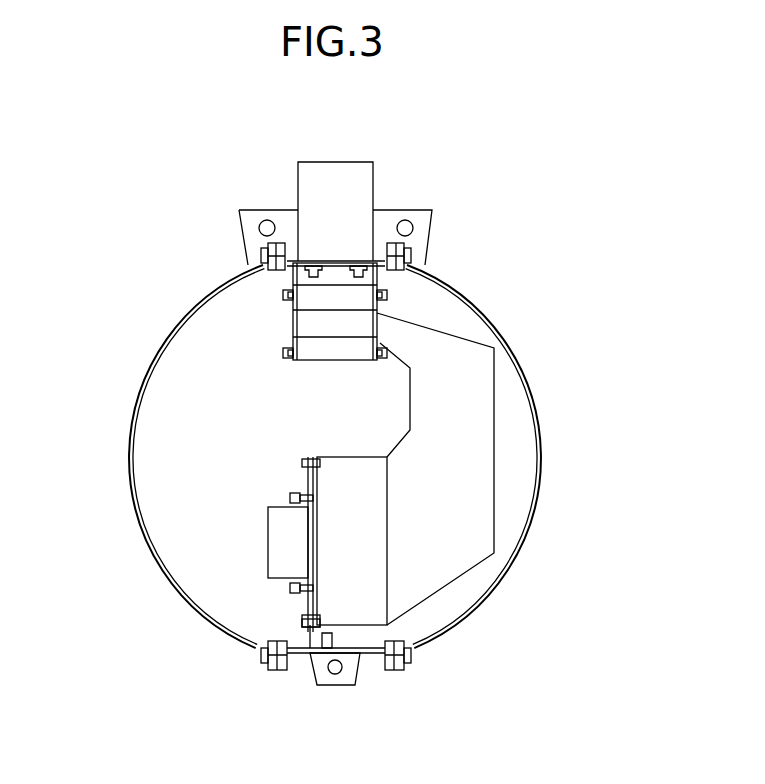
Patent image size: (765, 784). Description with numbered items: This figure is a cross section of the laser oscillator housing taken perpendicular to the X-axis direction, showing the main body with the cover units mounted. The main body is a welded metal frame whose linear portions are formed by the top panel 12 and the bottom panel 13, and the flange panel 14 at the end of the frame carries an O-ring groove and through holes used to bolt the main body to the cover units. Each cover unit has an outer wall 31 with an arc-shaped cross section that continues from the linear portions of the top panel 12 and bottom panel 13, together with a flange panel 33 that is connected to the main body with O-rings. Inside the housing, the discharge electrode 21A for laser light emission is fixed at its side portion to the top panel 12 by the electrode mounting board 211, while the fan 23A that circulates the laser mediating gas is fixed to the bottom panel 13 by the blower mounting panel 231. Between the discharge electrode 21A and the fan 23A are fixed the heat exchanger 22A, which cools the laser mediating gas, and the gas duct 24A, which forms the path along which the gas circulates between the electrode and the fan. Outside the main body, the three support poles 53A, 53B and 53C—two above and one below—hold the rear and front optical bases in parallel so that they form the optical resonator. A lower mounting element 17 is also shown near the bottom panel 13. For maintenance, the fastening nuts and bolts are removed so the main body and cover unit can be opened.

The top panel 12 is at (345, 261).
The bottom panel 13 is at (298, 655).
The flange panel 14 is at (392, 660).
The lower mount 17 is at (393, 645).
The discharge electrode 21A is at (325, 360).
The electrode mounting board 211 is at (293, 323).
The heat exchanger 22A is at (388, 498).
The fan 23A is at (268, 535).
The blower mounting panel 231 is at (300, 597).
The gas duct 24A is at (494, 455).
The outer wall 31 is at (540, 411).
The flange panel 33 is at (401, 662).
The support pole 53A is at (405, 220).
The support pole 53B is at (267, 220).
The support pole 53C is at (335, 674).